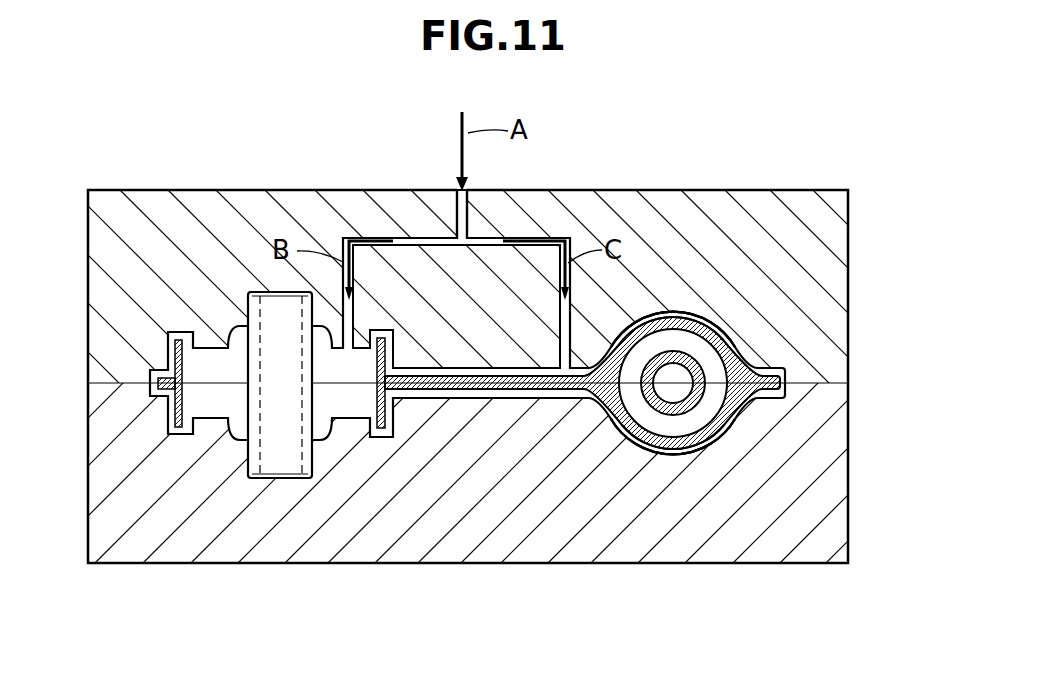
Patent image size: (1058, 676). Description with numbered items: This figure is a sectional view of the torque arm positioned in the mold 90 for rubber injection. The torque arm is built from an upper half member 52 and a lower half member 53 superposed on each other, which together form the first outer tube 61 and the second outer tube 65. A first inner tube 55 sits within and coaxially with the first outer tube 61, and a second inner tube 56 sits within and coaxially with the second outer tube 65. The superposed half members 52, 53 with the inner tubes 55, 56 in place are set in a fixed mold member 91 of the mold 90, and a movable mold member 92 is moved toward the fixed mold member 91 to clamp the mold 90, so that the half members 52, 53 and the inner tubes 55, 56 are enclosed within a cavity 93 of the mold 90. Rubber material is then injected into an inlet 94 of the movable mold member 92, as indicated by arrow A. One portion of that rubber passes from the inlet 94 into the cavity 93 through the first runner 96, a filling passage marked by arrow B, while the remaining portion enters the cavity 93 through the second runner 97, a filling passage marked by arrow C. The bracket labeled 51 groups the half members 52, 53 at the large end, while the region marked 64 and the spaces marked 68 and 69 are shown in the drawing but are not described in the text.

The large end portion 51 is at (884, 303).
The upper half member 52 is at (742, 349).
The lower half member 53 is at (742, 418).
The first inner tube 55 is at (277, 330).
The second inner tube 56 is at (656, 402).
The first outer tube 61 is at (170, 416).
The flange portion 64 is at (378, 381).
The second outer tube 65 is at (700, 323).
The inner space of large end 68 is at (623, 405).
The cavity 69 is at (612, 337).
The mold 90 is at (734, 186).
The fixed mold member 91 is at (625, 563).
The movable mold member 92 is at (628, 205).
The cavity 93 is at (483, 398).
The inlet 94 is at (457, 188).
The first runner 96 is at (350, 316).
The second runner 97 is at (562, 315).